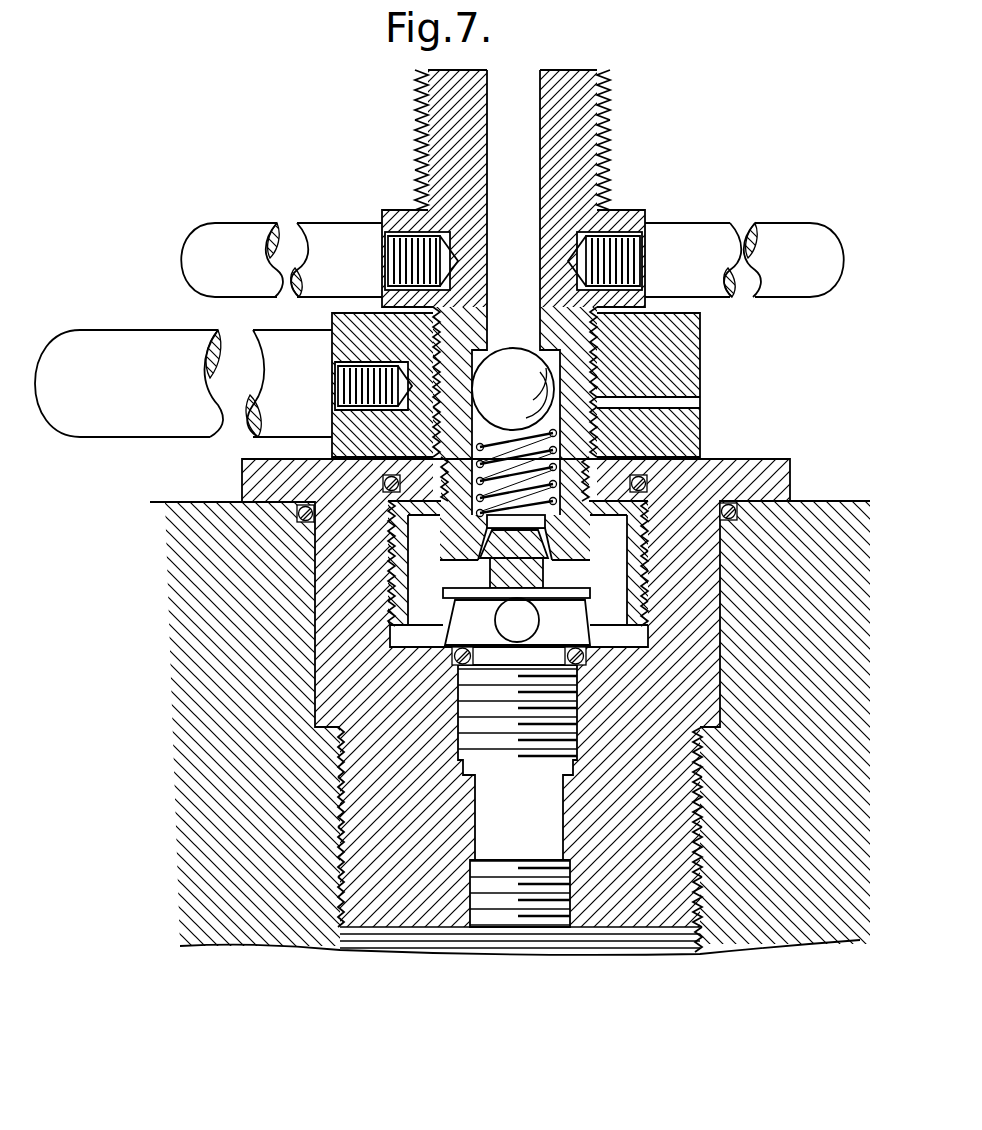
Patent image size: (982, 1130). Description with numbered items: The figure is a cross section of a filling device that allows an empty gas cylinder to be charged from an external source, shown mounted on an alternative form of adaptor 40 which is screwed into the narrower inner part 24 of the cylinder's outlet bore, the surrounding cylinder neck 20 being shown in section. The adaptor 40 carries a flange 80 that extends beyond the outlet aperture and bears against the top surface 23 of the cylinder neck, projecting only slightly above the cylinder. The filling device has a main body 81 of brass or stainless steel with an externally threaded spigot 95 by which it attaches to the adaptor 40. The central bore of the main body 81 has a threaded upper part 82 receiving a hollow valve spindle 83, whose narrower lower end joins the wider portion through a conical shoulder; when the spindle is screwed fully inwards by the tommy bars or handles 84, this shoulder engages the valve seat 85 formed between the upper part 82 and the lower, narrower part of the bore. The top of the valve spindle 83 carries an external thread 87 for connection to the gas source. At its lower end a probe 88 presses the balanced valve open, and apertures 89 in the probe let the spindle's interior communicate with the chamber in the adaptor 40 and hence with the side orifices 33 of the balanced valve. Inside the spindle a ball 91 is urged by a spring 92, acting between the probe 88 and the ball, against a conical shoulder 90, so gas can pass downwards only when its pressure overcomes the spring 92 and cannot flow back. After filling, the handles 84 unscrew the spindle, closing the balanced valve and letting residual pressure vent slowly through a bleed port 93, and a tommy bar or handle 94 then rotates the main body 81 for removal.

The housing 20 is at (235, 775).
The top surface 23 is at (262, 458).
The inner part 24 is at (517, 845).
The side orifices 33 is at (518, 628).
The adaptor 40 is at (330, 655).
The flange 80 is at (783, 468).
The main body 81 is at (250, 500).
The upper part of the bore 82 is at (640, 348).
The valve spindle 83 is at (586, 97).
The tommy bars or handles 84 is at (215, 235).
The valve seat 85 is at (605, 447).
The external thread 87 is at (422, 90).
The probe 88 is at (600, 538).
The apertures 89 is at (490, 568).
The conical shoulder 90 is at (480, 358).
The ball 91 is at (510, 362).
The spring 92 is at (480, 512).
The bleed port 93 is at (678, 402).
The tommy bar or handle 94 is at (137, 415).
The externally threaded spigot 95 is at (383, 562).